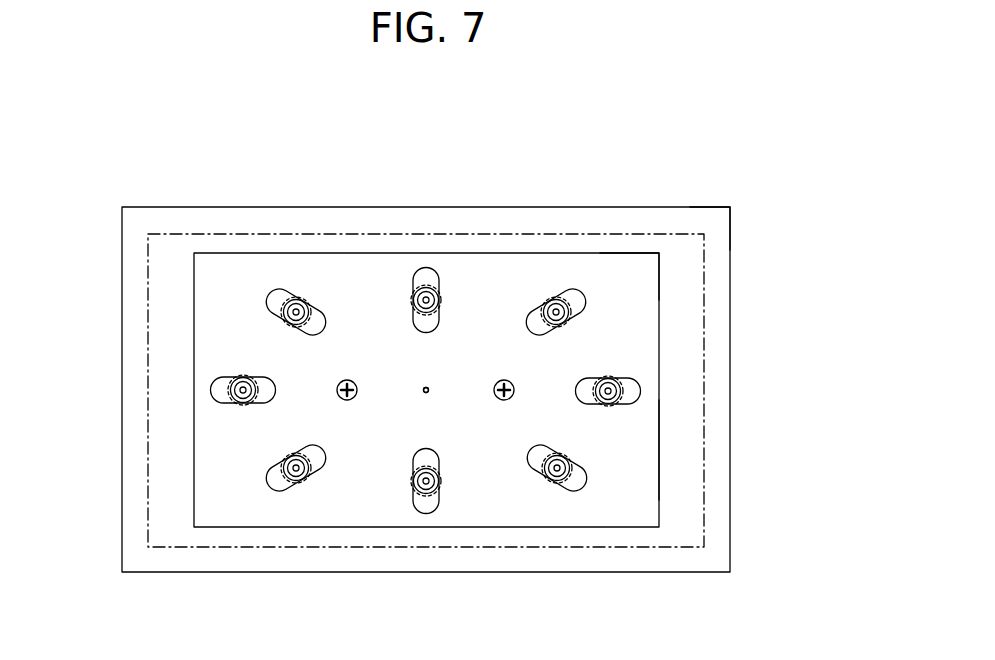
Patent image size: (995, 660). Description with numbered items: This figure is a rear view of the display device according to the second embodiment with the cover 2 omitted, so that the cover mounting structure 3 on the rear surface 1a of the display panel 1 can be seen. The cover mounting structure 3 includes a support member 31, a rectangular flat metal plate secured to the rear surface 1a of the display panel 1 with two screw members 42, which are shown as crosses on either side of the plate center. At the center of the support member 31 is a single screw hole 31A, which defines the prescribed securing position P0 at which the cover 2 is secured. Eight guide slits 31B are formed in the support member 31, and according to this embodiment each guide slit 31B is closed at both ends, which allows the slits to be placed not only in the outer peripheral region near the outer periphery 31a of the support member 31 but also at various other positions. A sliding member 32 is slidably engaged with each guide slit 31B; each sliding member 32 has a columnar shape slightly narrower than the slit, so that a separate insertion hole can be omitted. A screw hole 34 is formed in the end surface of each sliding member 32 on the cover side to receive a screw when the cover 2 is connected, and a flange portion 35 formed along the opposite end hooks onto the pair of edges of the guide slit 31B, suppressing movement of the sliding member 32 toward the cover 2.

The display panel 1 is at (200, 207).
The rear surface 1a is at (722, 224).
The cover 2 is at (426, 336).
The cover mounting structure 3 is at (668, 248).
The support member 31 is at (213, 469).
The outer periphery 31a is at (659, 443).
The screw hole 31A is at (424, 388).
The guide slit 31B is at (270, 290).
The sliding member 32 is at (298, 299).
The screw hole 34 is at (555, 462).
The flange portion 35 is at (529, 450).
The screw member 42 is at (341, 383).
The securing position P0 is at (421, 397).